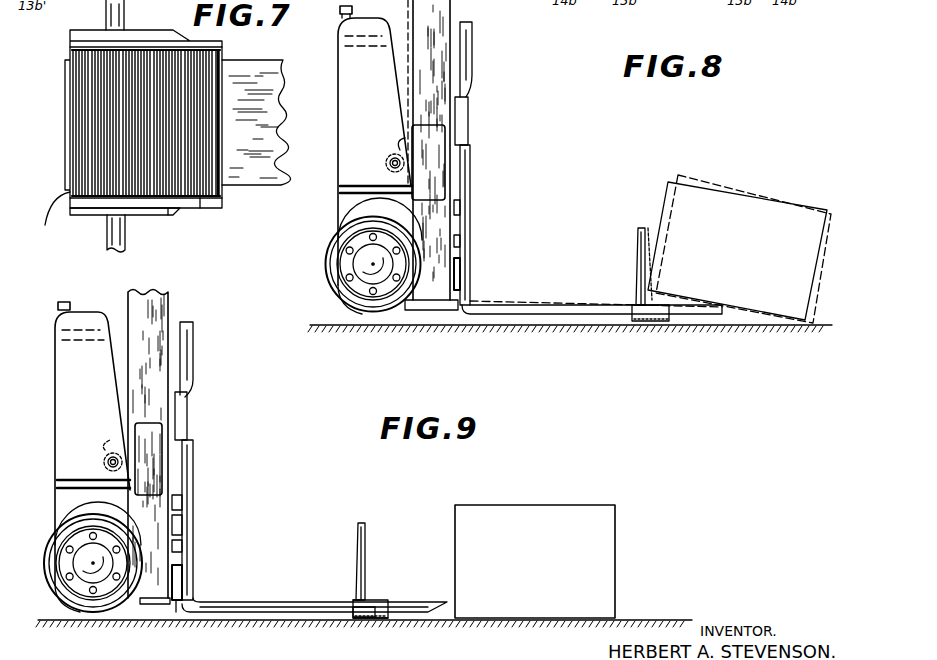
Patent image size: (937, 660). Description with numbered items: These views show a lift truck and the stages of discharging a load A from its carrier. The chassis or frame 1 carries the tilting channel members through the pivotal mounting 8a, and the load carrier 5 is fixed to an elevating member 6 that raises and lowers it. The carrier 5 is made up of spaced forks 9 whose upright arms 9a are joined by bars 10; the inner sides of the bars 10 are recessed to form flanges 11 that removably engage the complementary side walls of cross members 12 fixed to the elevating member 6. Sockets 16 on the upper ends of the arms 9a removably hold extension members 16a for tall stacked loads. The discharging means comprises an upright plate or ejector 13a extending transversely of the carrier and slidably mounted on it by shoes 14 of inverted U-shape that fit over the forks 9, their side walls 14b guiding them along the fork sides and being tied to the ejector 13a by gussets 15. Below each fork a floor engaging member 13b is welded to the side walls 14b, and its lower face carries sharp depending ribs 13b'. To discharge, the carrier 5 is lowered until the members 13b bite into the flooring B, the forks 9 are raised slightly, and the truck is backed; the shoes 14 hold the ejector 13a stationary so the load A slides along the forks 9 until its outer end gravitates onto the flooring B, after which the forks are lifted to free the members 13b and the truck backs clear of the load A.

In FIG. 8, the chassis or frame 1 is at (340, 200).
In FIG. 9, the load carrier 5 is at (314, 600).
In FIG. 8, the elevating member 6 is at (471, 246).
In FIG. 9, the elevating member 6 is at (176, 533).
In FIG. 9, the pivotal mounting 8a is at (113, 455).
In FIG. 7, the forks 9 is at (284, 66).
In FIG. 8, the forks 9 is at (623, 322).
In FIG. 9, the forks 9 is at (268, 583).
In FIG. 8, the upright arms 9a is at (470, 178).
In FIG. 9, the upright arms 9a is at (193, 448).
In FIG. 8, the bars 10 is at (460, 206).
In FIG. 9, the bars 10 is at (176, 605).
In FIG. 9, the flanges 11 is at (178, 497).
In FIG. 8, the cross members 12 is at (463, 272).
In FIG. 9, the cross members 12 is at (180, 520).
In FIG. 7, the upright plate (ejector) 13a is at (125, 232).
In FIG. 8, the upright plate (ejector) 13a is at (640, 248).
In FIG. 9, the upright plate (ejector) 13a is at (366, 540).
In FIG. 7, the floor engaging member 13b is at (166, 126).
In FIG. 9, the floor engaging member 13b is at (368, 633).
In FIG. 7, the depending ribs 13b' is at (55, 217).
In FIG. 8, the shoe 14 is at (670, 303).
In FIG. 9, the shoe 14 is at (382, 600).
In FIG. 7, the side walls 14b is at (200, 204).
In FIG. 7, the gussets 15 is at (168, 212).
In FIG. 9, the gussets 15 is at (356, 600).
In FIG. 8, the sockets 16 is at (466, 122).
In FIG. 8, the extension member 16a is at (473, 52).
In FIG. 8, the load A is at (666, 195).
In FIG. 8, the floor or flooring B is at (375, 326).
In FIG. 9, the floor or flooring B is at (665, 616).